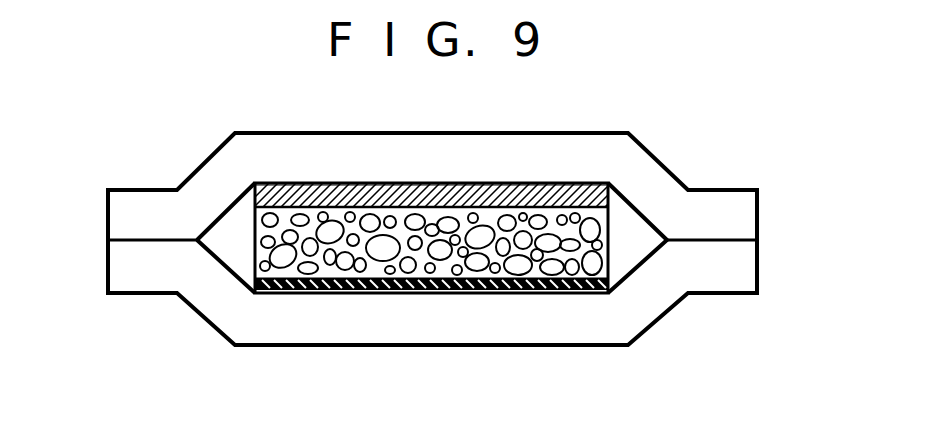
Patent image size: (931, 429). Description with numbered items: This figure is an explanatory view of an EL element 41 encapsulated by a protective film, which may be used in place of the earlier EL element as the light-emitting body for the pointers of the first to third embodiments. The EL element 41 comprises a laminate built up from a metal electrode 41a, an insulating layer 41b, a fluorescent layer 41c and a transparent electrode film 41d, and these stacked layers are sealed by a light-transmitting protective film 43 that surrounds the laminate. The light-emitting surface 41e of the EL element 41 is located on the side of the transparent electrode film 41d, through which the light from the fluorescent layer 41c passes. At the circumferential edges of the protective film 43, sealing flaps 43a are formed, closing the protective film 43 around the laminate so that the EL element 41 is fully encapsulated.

The EL element 41 is at (205, 338).
The metal electrode 41a is at (585, 295).
The insulating layer 41b is at (600, 287).
The fluorescent layer 41c is at (603, 243).
The transparent electrode film 41d is at (612, 192).
The light-emitting surface 41e is at (332, 183).
The light-transmitting protective film 43 is at (625, 163).
The sealing flaps 43a is at (143, 203).